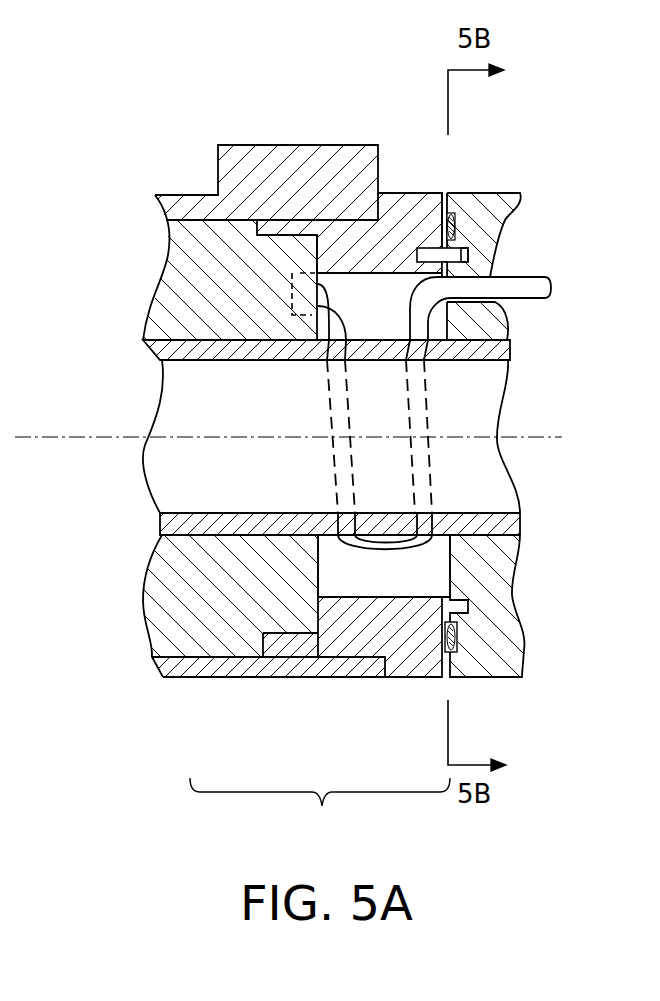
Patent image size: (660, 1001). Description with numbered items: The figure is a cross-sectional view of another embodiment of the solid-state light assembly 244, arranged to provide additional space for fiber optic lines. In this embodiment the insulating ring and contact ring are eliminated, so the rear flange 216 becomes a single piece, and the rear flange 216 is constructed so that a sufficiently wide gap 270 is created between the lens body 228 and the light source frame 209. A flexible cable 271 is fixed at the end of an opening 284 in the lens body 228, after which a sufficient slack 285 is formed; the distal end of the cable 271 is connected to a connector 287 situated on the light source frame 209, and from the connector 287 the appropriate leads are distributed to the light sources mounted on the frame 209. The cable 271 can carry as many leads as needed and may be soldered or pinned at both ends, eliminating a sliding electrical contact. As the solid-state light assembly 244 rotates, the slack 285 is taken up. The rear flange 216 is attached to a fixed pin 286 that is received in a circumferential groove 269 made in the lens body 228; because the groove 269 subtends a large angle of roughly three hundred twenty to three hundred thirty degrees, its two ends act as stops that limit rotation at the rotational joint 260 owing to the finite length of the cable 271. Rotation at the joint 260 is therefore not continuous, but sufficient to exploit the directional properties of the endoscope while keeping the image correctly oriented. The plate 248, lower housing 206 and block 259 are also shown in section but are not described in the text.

The light source frame 209 is at (168, 252).
The rear flange 216 is at (408, 193).
The lens body 228 is at (502, 193).
The circumferential groove 269 is at (472, 256).
The fixed pin 286 is at (414, 252).
The flexible cable 271 is at (542, 276).
The opening 284 is at (493, 300).
The connector 287 is at (292, 278).
The upper plate 248 is at (158, 330).
The slack 285 is at (333, 468).
The lower housing block 206 is at (172, 677).
The gap 270 is at (338, 582).
The lower right block 259 is at (457, 643).
The rotational joint 260 is at (445, 677).
The solid-state light assembly 244 is at (320, 813).